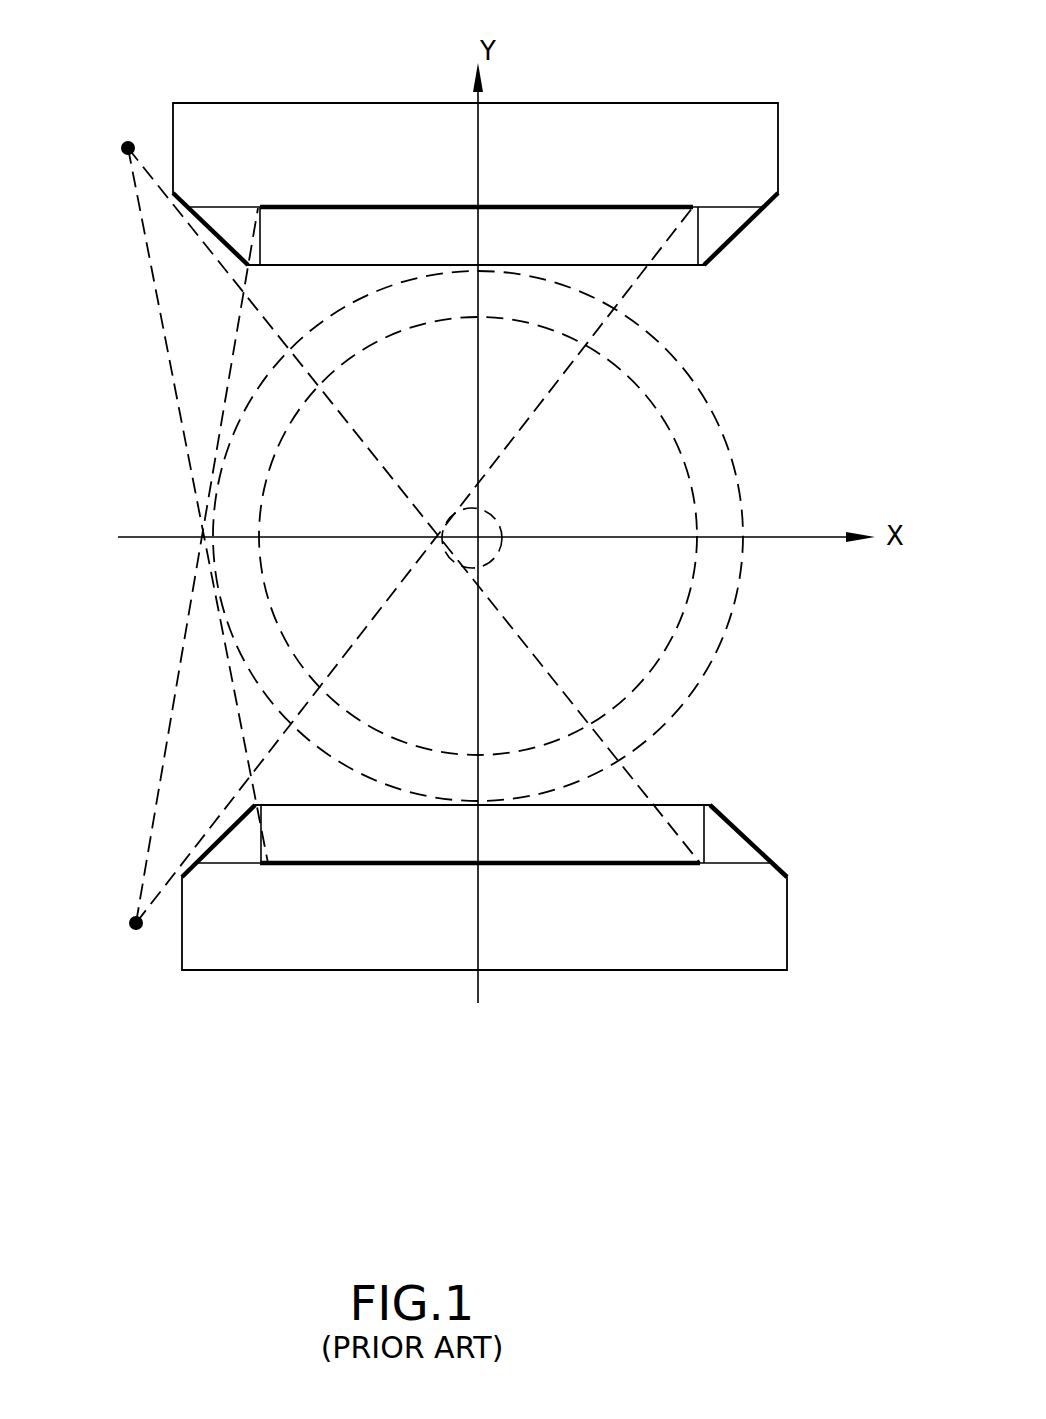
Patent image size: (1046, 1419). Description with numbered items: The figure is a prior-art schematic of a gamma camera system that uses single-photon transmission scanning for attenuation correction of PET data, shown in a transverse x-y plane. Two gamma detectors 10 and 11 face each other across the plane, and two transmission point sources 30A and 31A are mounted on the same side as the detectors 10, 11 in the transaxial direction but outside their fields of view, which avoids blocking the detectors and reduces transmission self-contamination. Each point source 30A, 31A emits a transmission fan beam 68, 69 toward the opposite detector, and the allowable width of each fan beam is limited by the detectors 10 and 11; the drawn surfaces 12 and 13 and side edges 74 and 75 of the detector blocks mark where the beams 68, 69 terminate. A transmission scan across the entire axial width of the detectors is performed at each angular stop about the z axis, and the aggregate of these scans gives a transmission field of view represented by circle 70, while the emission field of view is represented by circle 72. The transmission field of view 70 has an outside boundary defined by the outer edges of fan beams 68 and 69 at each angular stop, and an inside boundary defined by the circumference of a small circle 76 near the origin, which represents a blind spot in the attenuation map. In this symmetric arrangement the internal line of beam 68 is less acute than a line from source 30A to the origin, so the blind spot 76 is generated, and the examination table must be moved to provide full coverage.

The gamma detector 10 is at (637, 100).
The gamma detector 11 is at (438, 972).
The upper target surface 12 is at (586, 206).
The lower target surface 13 is at (372, 865).
The upper target side edge 74 is at (676, 257).
The lower target side edge 75 is at (682, 812).
The transmission field of view circle 70 is at (688, 383).
The emission field of view circle 72 is at (668, 648).
The blind spot circle 76 is at (493, 515).
The transmission fan beam 68 is at (222, 266).
The transmission fan beam 69 is at (218, 822).
The transmission point source 30A is at (123, 143).
The transmission point source 31A is at (128, 927).